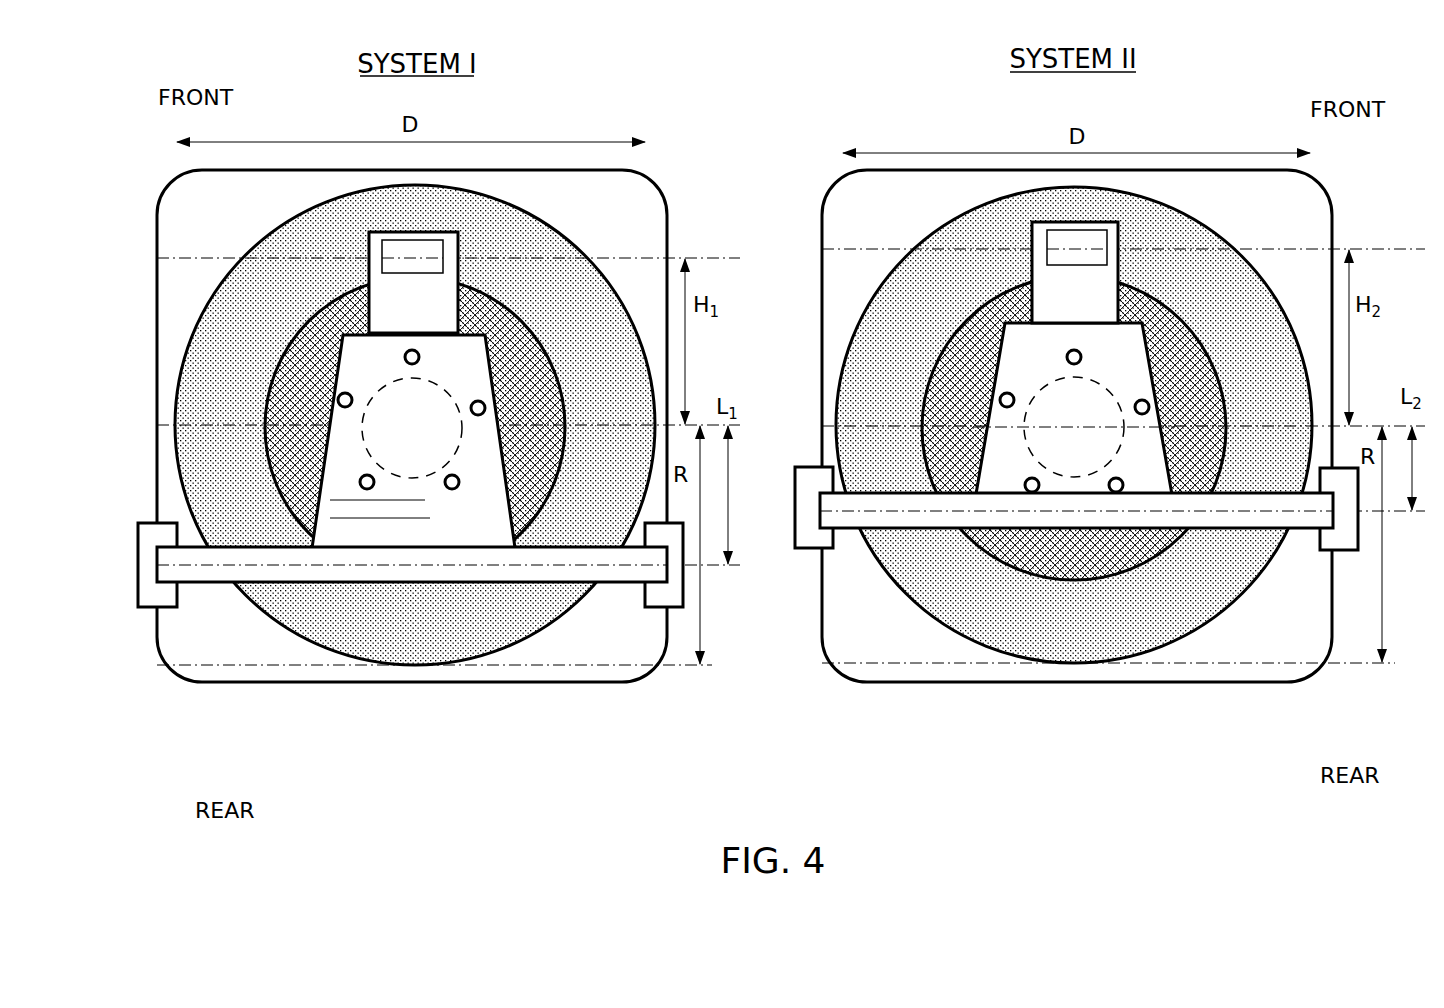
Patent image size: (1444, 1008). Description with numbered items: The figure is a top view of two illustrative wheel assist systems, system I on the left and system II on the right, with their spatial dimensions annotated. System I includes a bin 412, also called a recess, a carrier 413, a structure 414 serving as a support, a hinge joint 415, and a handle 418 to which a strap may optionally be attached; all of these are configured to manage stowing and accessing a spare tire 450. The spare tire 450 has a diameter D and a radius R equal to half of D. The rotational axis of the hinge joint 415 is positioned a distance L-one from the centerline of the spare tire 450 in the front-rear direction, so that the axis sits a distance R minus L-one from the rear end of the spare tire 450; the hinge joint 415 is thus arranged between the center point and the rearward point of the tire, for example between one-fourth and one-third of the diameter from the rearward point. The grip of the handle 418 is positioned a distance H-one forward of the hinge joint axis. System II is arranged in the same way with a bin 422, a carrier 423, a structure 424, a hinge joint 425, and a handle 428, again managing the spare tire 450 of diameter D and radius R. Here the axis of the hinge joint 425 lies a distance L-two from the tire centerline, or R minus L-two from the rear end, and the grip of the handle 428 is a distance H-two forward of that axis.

The bin 412 is at (587, 218).
The carrier 413 is at (487, 540).
The structure 414 is at (175, 607).
The hinge joint 415 is at (282, 625).
The handle 418 is at (392, 314).
The spare tire 450 is at (305, 248).
The bin 422 is at (1239, 216).
The carrier 423 is at (1155, 492).
The structure 424 is at (805, 548).
The hinge joint 425 is at (897, 590).
The handle 428 is at (1054, 301).